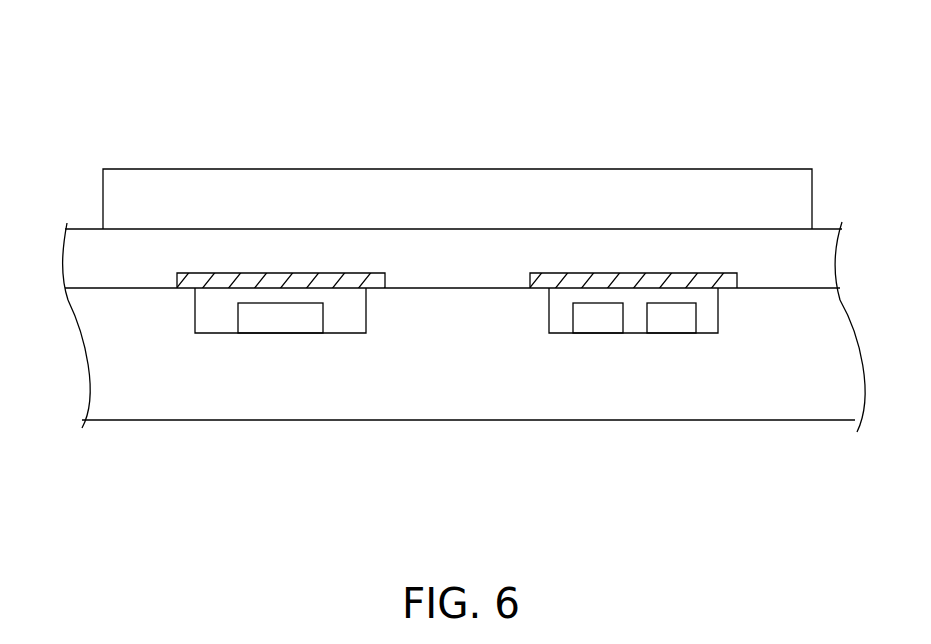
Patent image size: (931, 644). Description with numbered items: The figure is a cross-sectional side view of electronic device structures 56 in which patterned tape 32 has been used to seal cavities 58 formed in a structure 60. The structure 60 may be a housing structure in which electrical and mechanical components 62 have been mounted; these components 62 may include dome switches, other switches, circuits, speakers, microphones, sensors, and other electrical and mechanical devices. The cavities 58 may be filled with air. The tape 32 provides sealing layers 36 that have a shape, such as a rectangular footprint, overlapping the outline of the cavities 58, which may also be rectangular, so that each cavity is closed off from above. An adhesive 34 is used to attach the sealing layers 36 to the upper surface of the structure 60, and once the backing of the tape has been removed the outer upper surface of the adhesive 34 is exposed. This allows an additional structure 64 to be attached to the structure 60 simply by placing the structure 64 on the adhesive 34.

The electronic device structures 56 is at (186, 84).
The structure 64 is at (140, 182).
The tape 32 is at (58, 230).
The adhesive 34 is at (457, 245).
The sealing layers 36 is at (280, 282).
The cavities 58 is at (218, 325).
The electrical and mechanical components 62 is at (280, 325).
The structure 60 is at (399, 402).